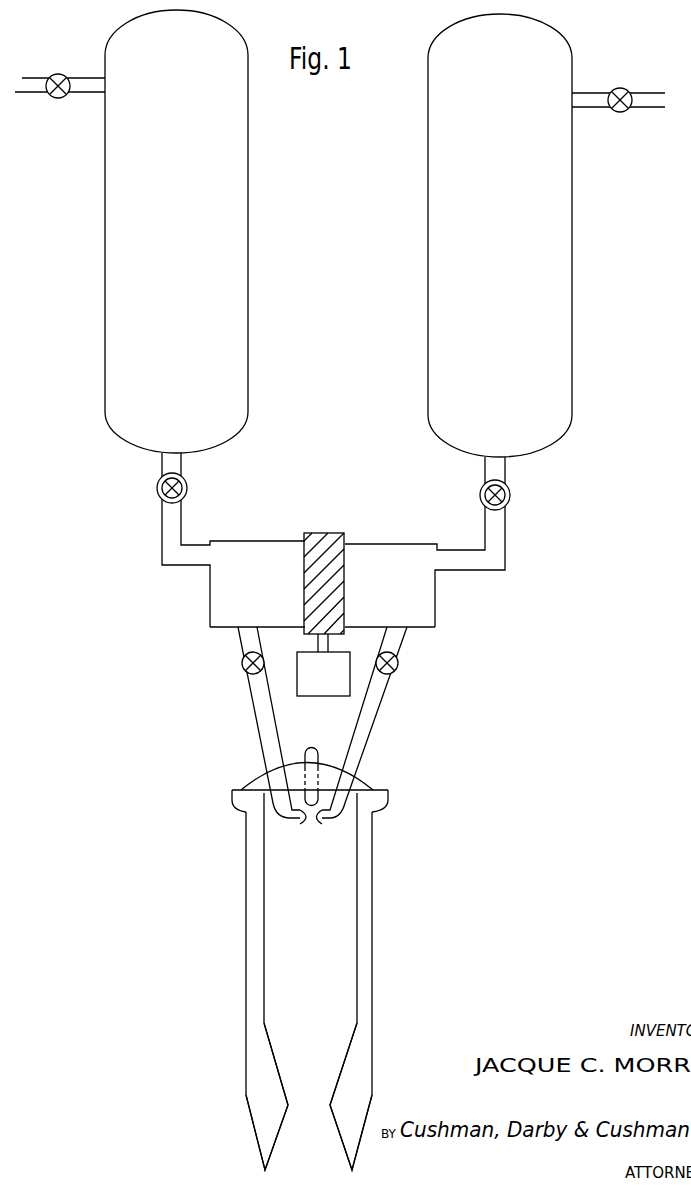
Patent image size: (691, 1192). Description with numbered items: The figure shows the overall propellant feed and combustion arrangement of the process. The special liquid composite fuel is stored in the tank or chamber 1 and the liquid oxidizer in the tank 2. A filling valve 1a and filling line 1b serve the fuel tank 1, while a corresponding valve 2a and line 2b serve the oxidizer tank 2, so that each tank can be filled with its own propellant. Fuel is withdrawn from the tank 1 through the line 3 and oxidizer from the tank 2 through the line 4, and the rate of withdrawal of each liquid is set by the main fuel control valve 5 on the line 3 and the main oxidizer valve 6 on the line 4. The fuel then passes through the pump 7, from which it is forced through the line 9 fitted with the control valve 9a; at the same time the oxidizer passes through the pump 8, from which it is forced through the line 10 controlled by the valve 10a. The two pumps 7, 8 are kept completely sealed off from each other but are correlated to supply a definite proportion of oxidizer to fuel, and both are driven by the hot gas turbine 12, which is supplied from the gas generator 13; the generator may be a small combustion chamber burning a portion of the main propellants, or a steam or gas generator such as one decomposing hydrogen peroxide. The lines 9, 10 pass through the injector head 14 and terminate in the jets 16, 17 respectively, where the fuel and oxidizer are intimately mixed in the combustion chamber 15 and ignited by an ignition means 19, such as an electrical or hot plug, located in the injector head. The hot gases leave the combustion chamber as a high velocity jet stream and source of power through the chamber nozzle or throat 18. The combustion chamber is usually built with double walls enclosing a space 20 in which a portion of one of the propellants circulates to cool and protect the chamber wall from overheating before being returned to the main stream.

The fuel tank 1 is at (105, 222).
The fuel filling valve 1a is at (59, 98).
The fuel filling line 1b is at (90, 78).
The oxidizer tank 2 is at (572, 243).
The oxidizer filling valve 2a is at (622, 112).
The oxidizer filling line 2b is at (590, 93).
The fuel withdrawal line 3 is at (172, 463).
The oxidizer withdrawal line 4 is at (497, 468).
The main fuel control valve 5 is at (158, 495).
The main oxidizer valve 6 is at (504, 501).
The fuel pump 7 is at (230, 582).
The oxidizer pump 8 is at (423, 600).
The fuel line 9 is at (256, 712).
The fuel line control valve 9a is at (243, 665).
The oxidizer line 10 is at (382, 713).
The oxidizer line control valve 10a is at (399, 665).
The hot gas turbine 12 is at (323, 533).
The gas generator 13 is at (333, 684).
The injector head 14 is at (294, 763).
The combustion chamber 15 is at (309, 981).
The fuel jet 16 is at (300, 816).
The oxidizer jet 17 is at (323, 817).
The chamber nozzle or throat 18 is at (300, 1152).
The ignition means 19 is at (319, 760).
The cooling space 20 is at (260, 1040).